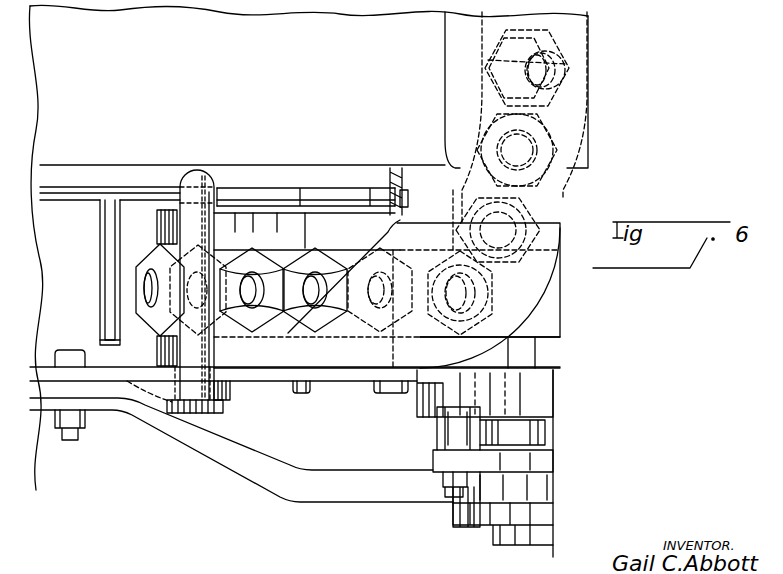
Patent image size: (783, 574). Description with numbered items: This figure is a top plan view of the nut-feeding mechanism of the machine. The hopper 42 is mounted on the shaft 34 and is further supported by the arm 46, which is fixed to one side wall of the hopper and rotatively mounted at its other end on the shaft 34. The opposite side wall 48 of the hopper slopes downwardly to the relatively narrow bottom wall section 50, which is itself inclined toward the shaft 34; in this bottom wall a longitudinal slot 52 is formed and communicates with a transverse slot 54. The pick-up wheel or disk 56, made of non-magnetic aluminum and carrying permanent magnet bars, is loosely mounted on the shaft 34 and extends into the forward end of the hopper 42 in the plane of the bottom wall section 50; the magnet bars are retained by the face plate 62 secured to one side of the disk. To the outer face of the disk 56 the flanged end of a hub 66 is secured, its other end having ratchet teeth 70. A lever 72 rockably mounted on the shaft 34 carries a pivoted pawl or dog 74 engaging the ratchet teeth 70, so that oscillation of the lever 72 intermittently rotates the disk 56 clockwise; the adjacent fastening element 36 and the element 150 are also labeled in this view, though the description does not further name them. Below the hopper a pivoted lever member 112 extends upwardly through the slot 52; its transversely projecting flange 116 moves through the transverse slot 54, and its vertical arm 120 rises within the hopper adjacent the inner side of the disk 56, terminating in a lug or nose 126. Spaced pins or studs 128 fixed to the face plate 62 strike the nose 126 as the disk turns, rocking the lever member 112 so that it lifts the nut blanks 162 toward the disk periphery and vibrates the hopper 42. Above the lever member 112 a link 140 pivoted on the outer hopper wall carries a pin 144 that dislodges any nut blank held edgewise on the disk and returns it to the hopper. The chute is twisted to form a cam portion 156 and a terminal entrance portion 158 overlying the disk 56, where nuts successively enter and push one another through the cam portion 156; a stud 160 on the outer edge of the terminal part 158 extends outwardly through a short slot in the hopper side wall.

The shaft 34 is at (547, 537).
The bolt 36 is at (468, 527).
The hopper 42 is at (197, 374).
The arm 46 is at (337, 495).
The inclined side wall 48 is at (308, 247).
The bottom wall section 50 is at (68, 238).
The longitudinal slot 52 is at (147, 186).
The transverse slot 54 is at (100, 317).
The pick-up wheel or disk 56 is at (237, 361).
The face plate 62 is at (233, 214).
The hub 66 is at (549, 400).
The ratchet teeth 70 is at (545, 440).
The lever 72 is at (540, 462).
The pawl or dog 74 is at (540, 430).
The lever member 112 is at (258, 196).
The flange 116 is at (110, 261).
The vertical arm 120 is at (345, 198).
The lug or nose 126 is at (406, 197).
The pins or studs 128 is at (395, 203).
The link 140 is at (113, 393).
The pin 144 is at (205, 180).
The arm 150 is at (474, 27).
The cam portion 156 is at (575, 87).
The terminal entrance portion 158 is at (543, 270).
The stud 160 is at (299, 394).
The nut blanks 162 is at (148, 313).